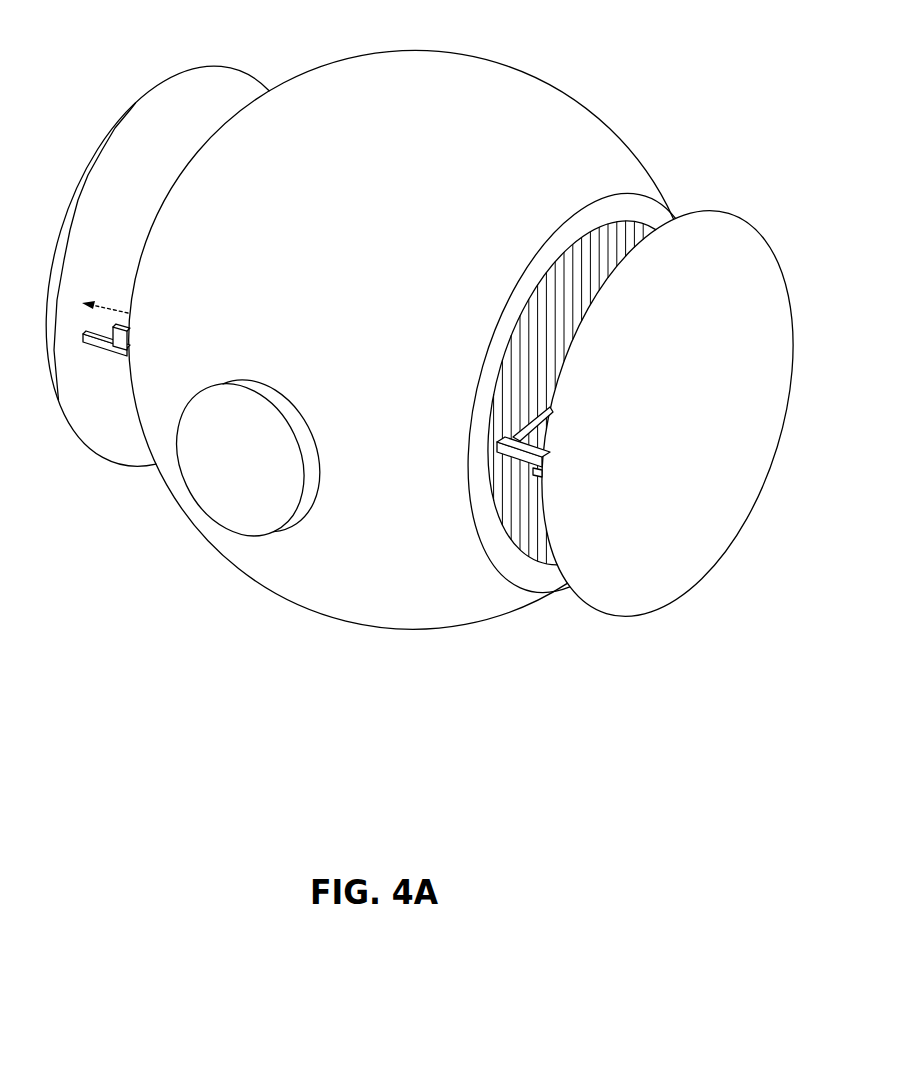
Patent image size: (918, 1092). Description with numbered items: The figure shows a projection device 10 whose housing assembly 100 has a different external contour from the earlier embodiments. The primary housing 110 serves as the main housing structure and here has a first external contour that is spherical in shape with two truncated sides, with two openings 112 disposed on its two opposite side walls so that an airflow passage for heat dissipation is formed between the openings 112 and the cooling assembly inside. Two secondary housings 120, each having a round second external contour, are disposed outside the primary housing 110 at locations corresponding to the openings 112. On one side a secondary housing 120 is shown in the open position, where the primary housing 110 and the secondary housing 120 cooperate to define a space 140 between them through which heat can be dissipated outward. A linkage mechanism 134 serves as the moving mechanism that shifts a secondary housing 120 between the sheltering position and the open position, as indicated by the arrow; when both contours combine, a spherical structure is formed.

The housing assembly 100 is at (760, 128).
The primary housing 110 is at (575, 168).
The opening 112 is at (508, 525).
The secondary housing 120 is at (175, 112).
The linkage mechanism 134 is at (113, 345).
The space 140 is at (573, 614).
The projection device 10 is at (342, 683).